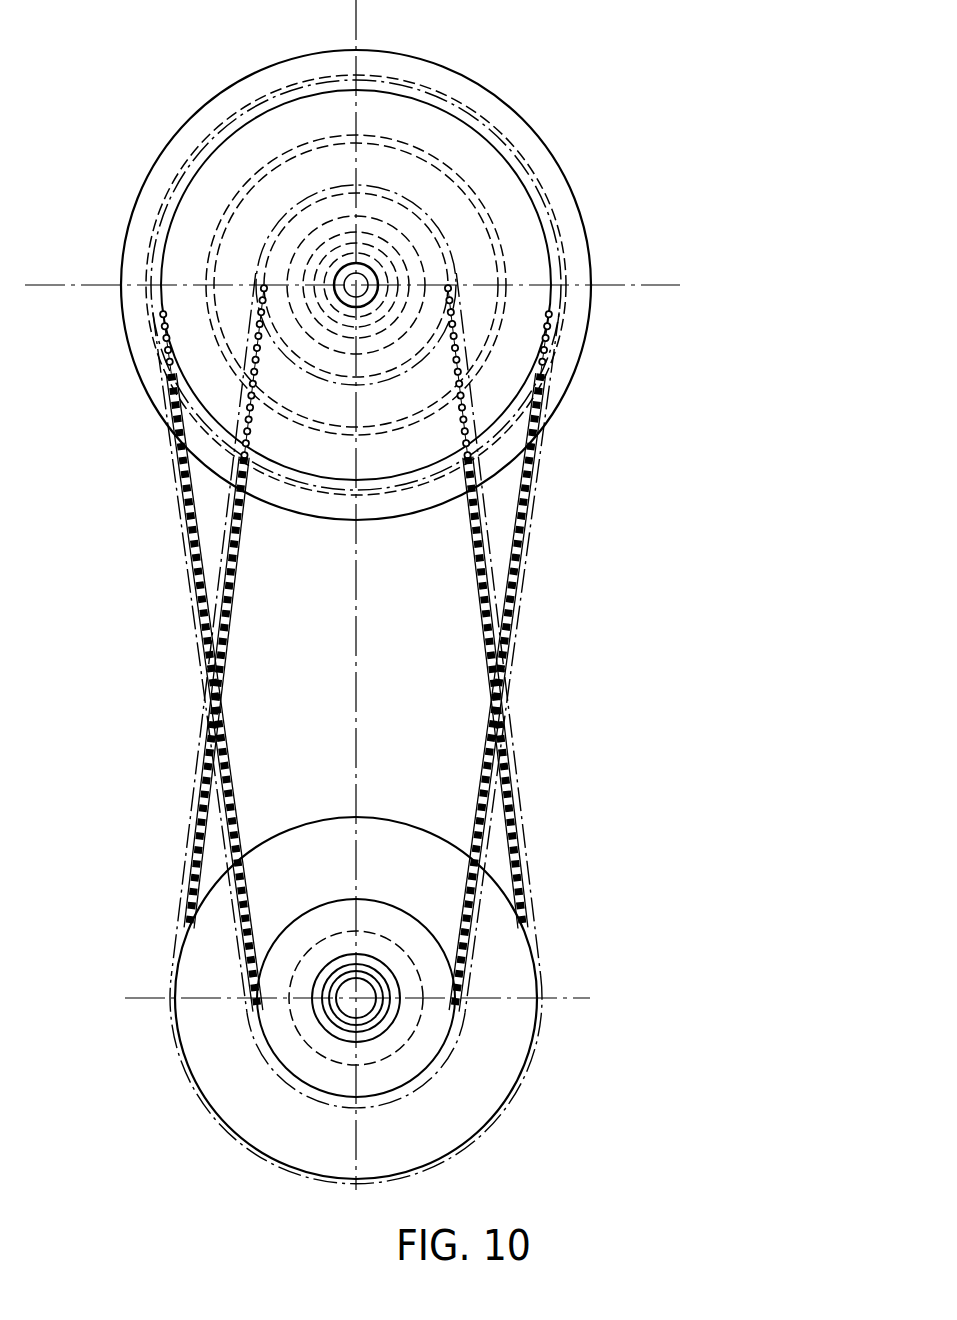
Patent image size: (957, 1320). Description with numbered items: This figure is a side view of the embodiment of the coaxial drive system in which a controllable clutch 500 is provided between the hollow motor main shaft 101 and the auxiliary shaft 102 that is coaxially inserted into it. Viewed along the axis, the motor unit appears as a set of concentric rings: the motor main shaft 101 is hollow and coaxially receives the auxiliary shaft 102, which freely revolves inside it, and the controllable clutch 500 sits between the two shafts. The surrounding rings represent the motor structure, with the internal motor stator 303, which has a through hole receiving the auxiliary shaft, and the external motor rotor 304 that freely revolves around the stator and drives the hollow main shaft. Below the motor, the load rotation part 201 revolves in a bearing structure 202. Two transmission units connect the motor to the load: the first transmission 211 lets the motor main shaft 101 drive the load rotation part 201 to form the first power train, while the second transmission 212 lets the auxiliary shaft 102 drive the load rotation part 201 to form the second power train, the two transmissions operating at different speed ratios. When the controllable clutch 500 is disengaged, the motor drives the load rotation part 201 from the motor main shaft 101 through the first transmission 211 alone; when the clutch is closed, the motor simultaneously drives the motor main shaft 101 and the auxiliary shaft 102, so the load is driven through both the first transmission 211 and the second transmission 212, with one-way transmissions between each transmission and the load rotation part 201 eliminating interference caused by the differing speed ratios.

The external motor rotor 304 is at (483, 124).
The internal motor stator 303 is at (458, 206).
The controllable clutch 500 is at (383, 227).
The motor main shaft 101 is at (382, 262).
The auxiliary shaft 102 is at (367, 290).
The second transmission 212 is at (521, 592).
The first transmission 211 is at (519, 790).
The load rotation part 201 is at (385, 963).
The bearing structure 202 is at (363, 1005).